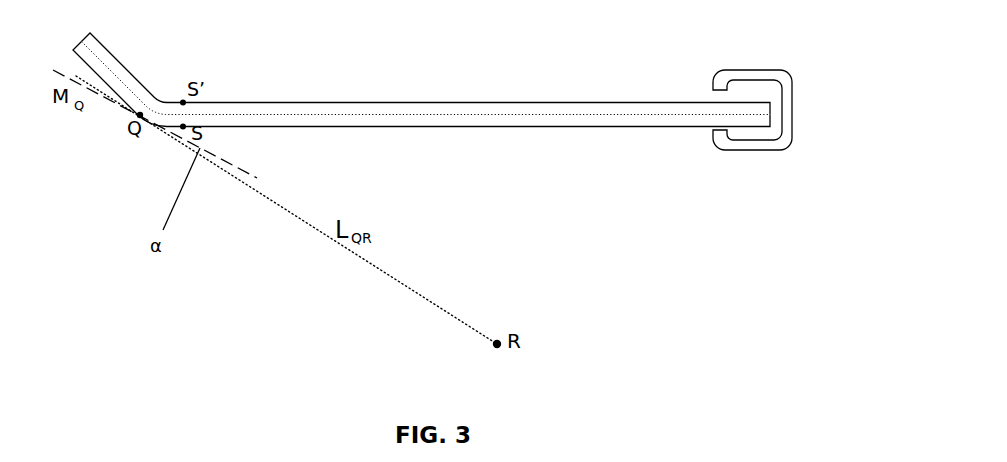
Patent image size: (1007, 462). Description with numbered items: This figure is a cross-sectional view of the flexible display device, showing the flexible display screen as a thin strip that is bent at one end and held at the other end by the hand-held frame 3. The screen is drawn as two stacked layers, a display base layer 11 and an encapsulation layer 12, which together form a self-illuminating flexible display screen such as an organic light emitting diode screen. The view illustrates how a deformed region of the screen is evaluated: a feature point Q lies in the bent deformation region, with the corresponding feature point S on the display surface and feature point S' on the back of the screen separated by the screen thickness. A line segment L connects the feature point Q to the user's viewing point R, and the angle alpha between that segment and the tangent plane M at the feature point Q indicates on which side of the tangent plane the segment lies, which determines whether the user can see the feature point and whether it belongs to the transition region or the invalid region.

The encapsulation layer 12 is at (496, 74).
The display base layer 11 is at (490, 122).
The hand-held frame 3 is at (790, 143).